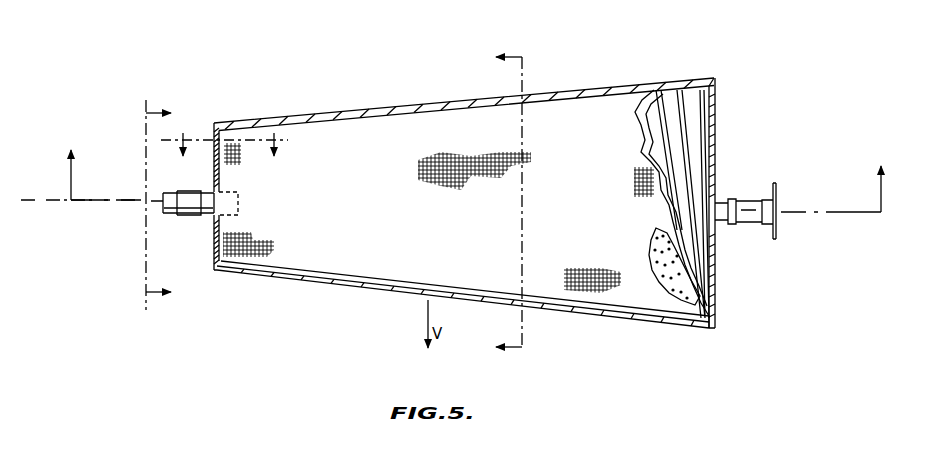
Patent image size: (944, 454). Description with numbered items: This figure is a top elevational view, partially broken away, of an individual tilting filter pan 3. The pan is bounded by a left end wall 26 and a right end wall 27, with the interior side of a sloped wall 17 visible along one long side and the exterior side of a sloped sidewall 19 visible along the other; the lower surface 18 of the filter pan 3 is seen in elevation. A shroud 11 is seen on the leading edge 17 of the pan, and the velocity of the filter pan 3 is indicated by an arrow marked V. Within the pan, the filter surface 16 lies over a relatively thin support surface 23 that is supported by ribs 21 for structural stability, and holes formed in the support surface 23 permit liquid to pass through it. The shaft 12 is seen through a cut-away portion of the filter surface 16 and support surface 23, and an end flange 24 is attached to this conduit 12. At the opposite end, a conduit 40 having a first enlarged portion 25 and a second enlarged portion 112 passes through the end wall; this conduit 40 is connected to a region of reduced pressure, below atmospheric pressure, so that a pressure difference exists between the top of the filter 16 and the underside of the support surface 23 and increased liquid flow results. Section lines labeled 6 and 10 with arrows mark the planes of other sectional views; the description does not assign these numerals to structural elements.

The filter pan 3 is at (716, 75).
The section line 6 is at (155, 205).
The section line 10 is at (509, 203).
The shroud 11 is at (343, 300).
The shaft 12 is at (746, 192).
The filter surface 16 is at (378, 176).
The sloped wall 17 is at (297, 269).
The lower surface 18 is at (705, 150).
The sloped sidewall 19 is at (281, 117).
The ribs 21 is at (657, 88).
The support surface 23 is at (659, 272).
The end flange 24 is at (777, 186).
The first enlarged portion 25 is at (186, 212).
The left end wall 26 is at (213, 160).
The right end wall 27 is at (712, 168).
The conduit 40 is at (145, 196).
The second enlarged portion 112 is at (205, 193).